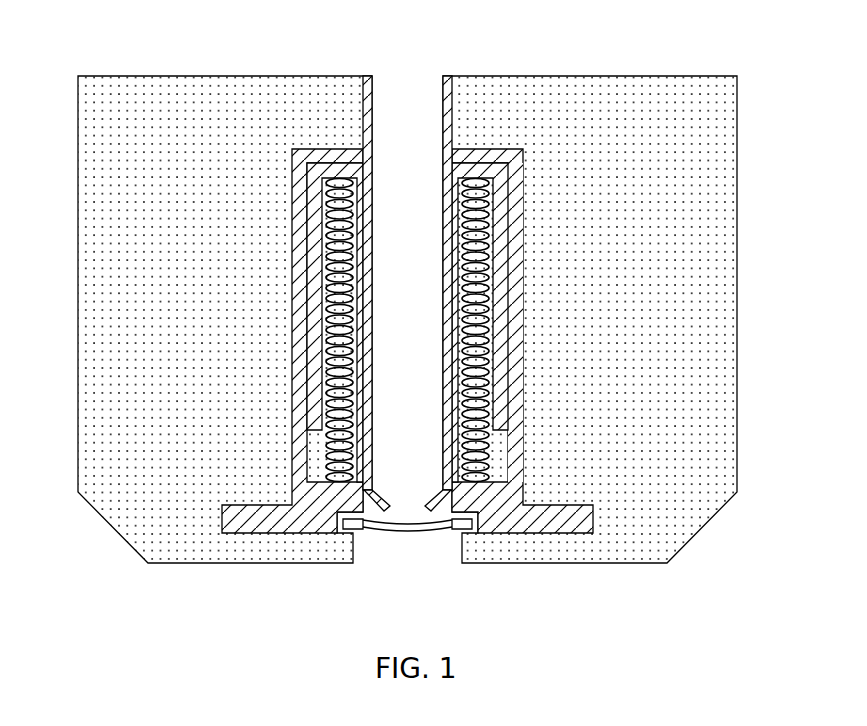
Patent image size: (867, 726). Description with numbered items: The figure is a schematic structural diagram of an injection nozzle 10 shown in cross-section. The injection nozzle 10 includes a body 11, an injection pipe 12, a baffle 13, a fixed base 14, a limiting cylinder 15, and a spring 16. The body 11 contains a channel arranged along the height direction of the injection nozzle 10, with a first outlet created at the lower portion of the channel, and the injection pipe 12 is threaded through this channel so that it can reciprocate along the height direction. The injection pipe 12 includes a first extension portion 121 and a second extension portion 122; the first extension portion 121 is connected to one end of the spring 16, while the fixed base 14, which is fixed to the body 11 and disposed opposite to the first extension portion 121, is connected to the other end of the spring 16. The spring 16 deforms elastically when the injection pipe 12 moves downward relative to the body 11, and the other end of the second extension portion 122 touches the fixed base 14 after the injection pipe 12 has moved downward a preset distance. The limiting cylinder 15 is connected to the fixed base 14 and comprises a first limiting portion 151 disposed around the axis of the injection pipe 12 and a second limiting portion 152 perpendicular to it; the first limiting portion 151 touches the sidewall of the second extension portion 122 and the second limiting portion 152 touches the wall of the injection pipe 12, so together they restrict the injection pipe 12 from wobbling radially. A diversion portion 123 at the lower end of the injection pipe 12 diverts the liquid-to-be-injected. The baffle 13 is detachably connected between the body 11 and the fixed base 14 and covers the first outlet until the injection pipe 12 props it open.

The injection nozzle 10 is at (413, 30).
The body 11 is at (735, 263).
The injection pipe 12 is at (365, 143).
The baffle 13 is at (358, 528).
The fixed base 14 is at (318, 508).
The limiting cylinder 15 is at (296, 250).
The spring 16 is at (510, 395).
The first extension portion 121 is at (485, 172).
The second extension portion 122 is at (317, 340).
The diversion portion 123 is at (437, 505).
The first limiting portion 151 is at (520, 265).
The second limiting portion 152 is at (478, 152).